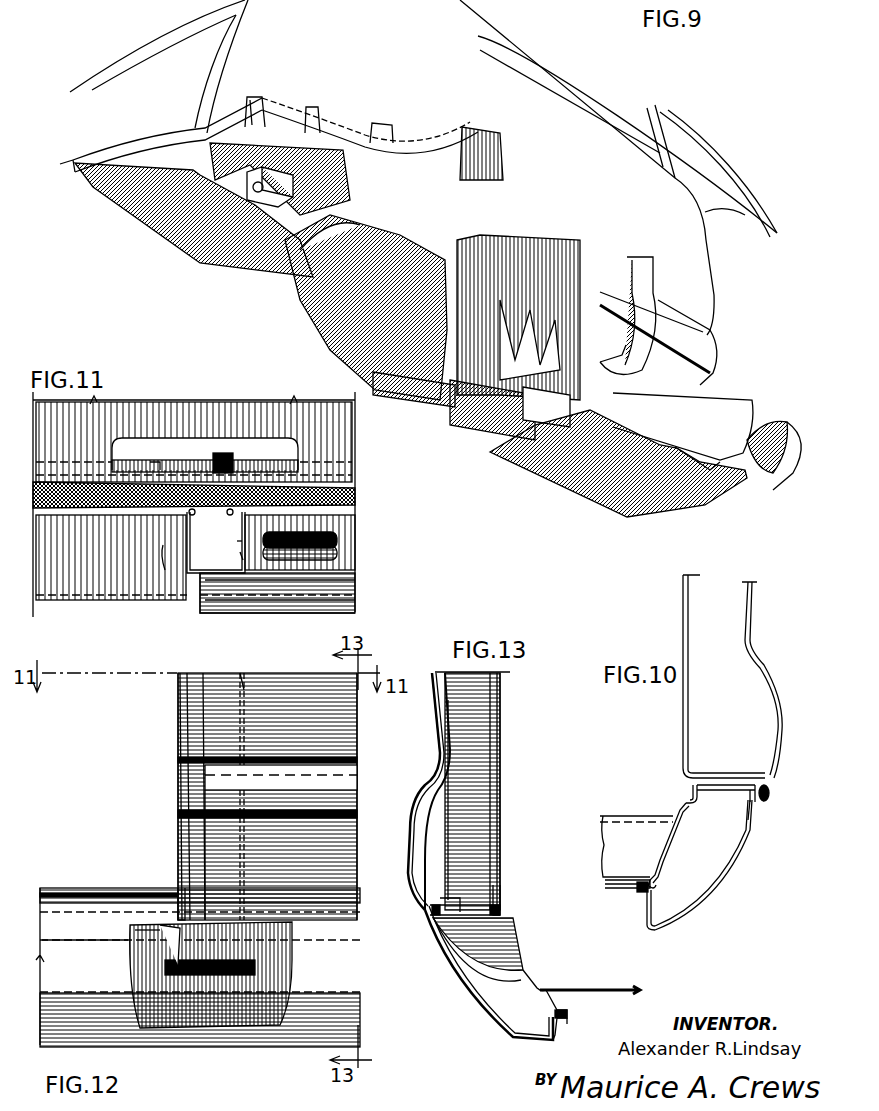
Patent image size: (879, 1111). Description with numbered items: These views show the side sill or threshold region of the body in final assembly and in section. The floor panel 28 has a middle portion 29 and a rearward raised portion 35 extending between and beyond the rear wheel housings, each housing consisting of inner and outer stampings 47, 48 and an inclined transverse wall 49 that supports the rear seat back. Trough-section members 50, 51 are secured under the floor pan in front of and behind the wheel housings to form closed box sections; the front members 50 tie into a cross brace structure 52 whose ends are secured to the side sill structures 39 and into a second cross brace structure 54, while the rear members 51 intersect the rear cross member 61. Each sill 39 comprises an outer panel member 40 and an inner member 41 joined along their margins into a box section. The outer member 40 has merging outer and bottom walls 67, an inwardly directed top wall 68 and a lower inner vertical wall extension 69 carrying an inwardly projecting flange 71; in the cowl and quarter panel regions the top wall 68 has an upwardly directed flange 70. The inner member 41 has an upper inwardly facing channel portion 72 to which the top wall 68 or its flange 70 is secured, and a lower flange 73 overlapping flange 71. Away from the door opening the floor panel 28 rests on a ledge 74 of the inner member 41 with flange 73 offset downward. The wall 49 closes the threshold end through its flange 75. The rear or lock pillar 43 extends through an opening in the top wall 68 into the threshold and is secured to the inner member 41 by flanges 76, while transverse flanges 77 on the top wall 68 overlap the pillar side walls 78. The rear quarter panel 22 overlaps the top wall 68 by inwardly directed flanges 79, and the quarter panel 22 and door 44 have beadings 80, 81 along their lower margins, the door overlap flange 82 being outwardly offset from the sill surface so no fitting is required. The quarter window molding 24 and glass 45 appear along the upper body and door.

In FIG. 9, the rear quarter panel 22 is at (706, 262).
In FIG. 11, the rear quarter panel 22 is at (345, 584).
In FIG. 12, the rear quarter panel 22 is at (345, 748).
In FIG. 13, the rear quarter panel 22 is at (432, 678).
In FIG. 9, the window molding 24 is at (710, 174).
In FIG. 11, the floor panel 28 is at (123, 416).
In FIG. 10, the floor panel 28 is at (614, 895).
In FIG. 9, the middle portion 29 is at (693, 503).
In FIG. 13, the middle portion 29 is at (630, 990).
In FIG. 9, the raised portion 35 is at (172, 238).
In FIG. 9, the side sill structure 39 is at (745, 397).
In FIG. 11, the side sill structure 39 is at (66, 597).
In FIG. 12, the side sill structure 39 is at (232, 1047).
In FIG. 9, the outer panel member 40 is at (784, 474).
In FIG. 12, the outer panel member 40 is at (82, 970).
In FIG. 13, the outer panel member 40 is at (505, 1040).
In FIG. 10, the outer panel member 40 is at (735, 889).
In FIG. 9, the inner member 41 is at (760, 428).
In FIG. 11, the inner member 41 is at (52, 512).
In FIG. 12, the inner member 41 is at (132, 936).
In FIG. 13, the inner member 41 is at (516, 952).
In FIG. 10, the inner member 41 is at (670, 845).
In FIG. 12, the rear or lock pillar 43 is at (244, 690).
In FIG. 13, the rear or lock pillar 43 is at (510, 727).
In FIG. 10, the door 44 is at (675, 623).
In FIG. 10, the glass pane 45 is at (618, 825).
In FIG. 9, the inner stamping 47 is at (390, 287).
In FIG. 9, the outer stamping 48 is at (485, 170).
In FIG. 11, the outer stamping 48 is at (223, 534).
In FIG. 9, the inclined transverse wall 49 is at (530, 380).
In FIG. 9, the front hollow-section member 50 is at (545, 423).
In FIG. 9, the rear hollow-section member 51 is at (296, 226).
In FIG. 9, the cross brace structure 52 is at (480, 452).
In FIG. 9, the second cross brace structure 54 is at (405, 408).
In FIG. 9, the rear cross member 61 is at (142, 150).
In FIG. 13, the outer and bottom walls 67 is at (458, 990).
In FIG. 10, the outer and bottom walls 67 is at (752, 854).
In FIG. 11, the top wall 68 is at (350, 537).
In FIG. 12, the top wall 68 is at (52, 895).
In FIG. 10, the top wall 68 is at (738, 791).
In FIG. 13, the lower inner vertical wall extension 69 is at (557, 1034).
In FIG. 10, the lower inner vertical wall extension 69 is at (647, 927).
In FIG. 13, the upwardly directed flange 70 is at (501, 893).
In FIG. 13, the inwardly projecting flange 71 is at (570, 1022).
In FIG. 10, the inwardly projecting flange 71 is at (640, 893).
In FIG. 13, the upper inwardly facing channel portion 72 is at (503, 913).
In FIG. 10, the upper inwardly facing channel portion 72 is at (690, 795).
In FIG. 11, the flange 73 is at (155, 470).
In FIG. 13, the flange 73 is at (560, 1014).
In FIG. 10, the flange 73 is at (657, 889).
In FIG. 11, the ledge 74 is at (240, 446).
In FIG. 13, the ledge 74 is at (540, 1000).
In FIG. 9, the flange 75 is at (618, 350).
In FIG. 12, the flange 76 is at (262, 950).
In FIG. 11, the transverse flange 77 is at (240, 552).
In FIG. 12, the transverse flange 77 is at (180, 890).
In FIG. 13, the transverse flange 77 is at (440, 900).
In FIG. 11, the side wall 78 is at (237, 541).
In FIG. 13, the side wall 78 is at (465, 806).
In FIG. 9, the inwardly directed flange 79 is at (642, 347).
In FIG. 13, the inwardly directed flange 79 is at (432, 913).
In FIG. 9, the beading 80 is at (712, 345).
In FIG. 12, the beading 80 is at (348, 814).
In FIG. 13, the beading 80 is at (420, 786).
In FIG. 10, the beading 81 is at (782, 685).
In FIG. 10, the overlap flange 82 is at (771, 801).